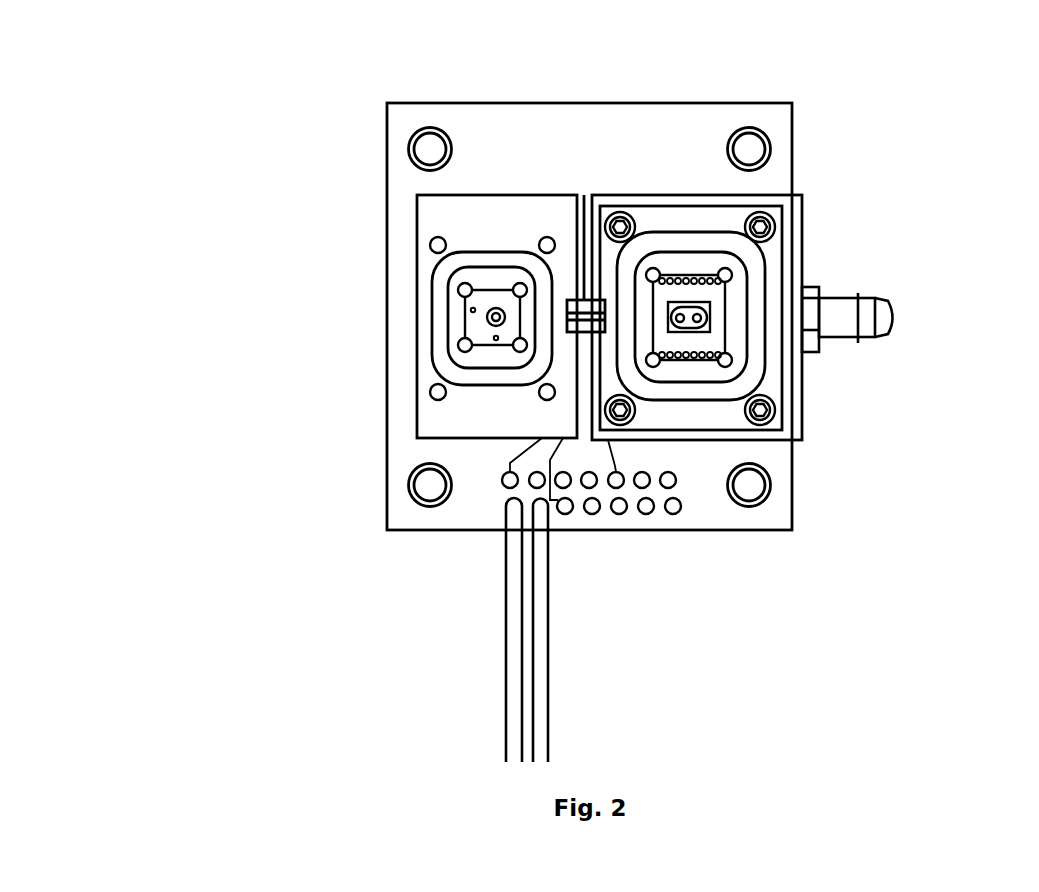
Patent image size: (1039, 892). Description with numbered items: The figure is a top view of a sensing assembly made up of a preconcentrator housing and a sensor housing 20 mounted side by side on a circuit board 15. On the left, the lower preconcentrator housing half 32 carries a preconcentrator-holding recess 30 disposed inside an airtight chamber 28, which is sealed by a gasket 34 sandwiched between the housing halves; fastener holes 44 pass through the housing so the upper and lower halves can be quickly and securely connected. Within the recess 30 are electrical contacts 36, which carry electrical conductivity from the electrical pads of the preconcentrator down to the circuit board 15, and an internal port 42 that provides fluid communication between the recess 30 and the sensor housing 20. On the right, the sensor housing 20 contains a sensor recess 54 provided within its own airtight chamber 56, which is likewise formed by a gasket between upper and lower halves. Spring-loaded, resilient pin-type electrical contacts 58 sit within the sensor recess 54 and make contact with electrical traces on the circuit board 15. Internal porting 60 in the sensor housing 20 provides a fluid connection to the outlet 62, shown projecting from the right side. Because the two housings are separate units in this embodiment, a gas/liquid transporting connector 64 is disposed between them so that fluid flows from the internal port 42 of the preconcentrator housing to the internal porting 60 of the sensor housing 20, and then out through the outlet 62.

The circuit board 15 is at (473, 514).
The sensor housing 20 is at (818, 230).
The airtight chamber 28 is at (495, 281).
The preconcentrator-holding recess 30 is at (479, 299).
The lower preconcentrator housing half 32 is at (448, 411).
The gasket 34 is at (440, 290).
The electrical contacts 36 is at (493, 337).
The internal port 42 is at (496, 309).
The fastener holes 44 is at (433, 246).
The sensor recess 54 is at (711, 342).
The airtight chamber 56 is at (733, 307).
The electrical contacts 58 is at (675, 280).
The internal porting 60 is at (686, 326).
The outlet 62 is at (888, 318).
The gas/liquid transporting connector 64 is at (585, 332).